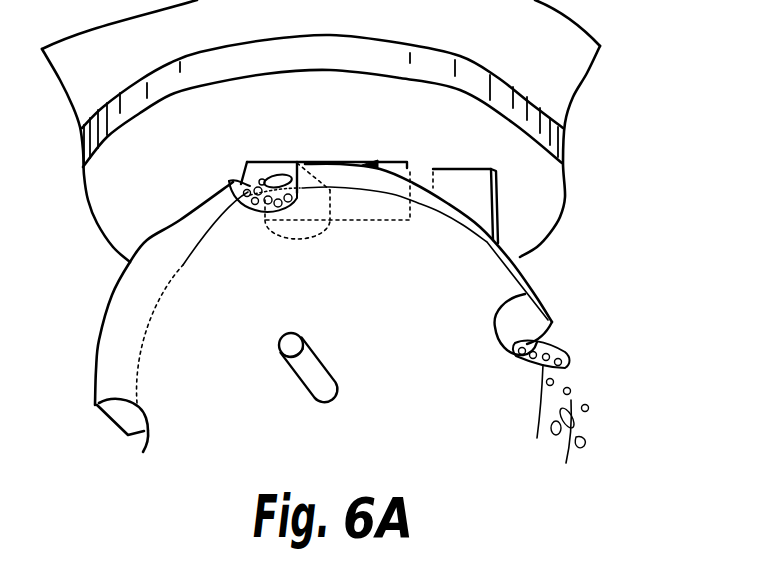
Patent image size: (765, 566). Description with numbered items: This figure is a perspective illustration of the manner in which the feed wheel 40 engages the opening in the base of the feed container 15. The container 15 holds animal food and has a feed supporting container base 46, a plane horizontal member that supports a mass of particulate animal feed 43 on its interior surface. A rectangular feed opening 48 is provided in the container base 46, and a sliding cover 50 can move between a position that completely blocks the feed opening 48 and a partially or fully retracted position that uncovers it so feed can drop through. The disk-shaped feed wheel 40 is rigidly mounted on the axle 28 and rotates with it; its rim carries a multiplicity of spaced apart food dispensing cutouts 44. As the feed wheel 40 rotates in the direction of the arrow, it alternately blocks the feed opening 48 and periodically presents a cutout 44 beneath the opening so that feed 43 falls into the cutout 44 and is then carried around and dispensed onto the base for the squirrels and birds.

The container 15 is at (511, 50).
The feed wheel 40 is at (360, 324).
The container base 46 is at (347, 128).
The feed opening 48 is at (260, 171).
The sliding cover 50 is at (454, 176).
The feed wheel food dispensing cutout 44 is at (495, 327).
The particulate animal feed 43 is at (238, 183).
The axle 28 is at (293, 376).